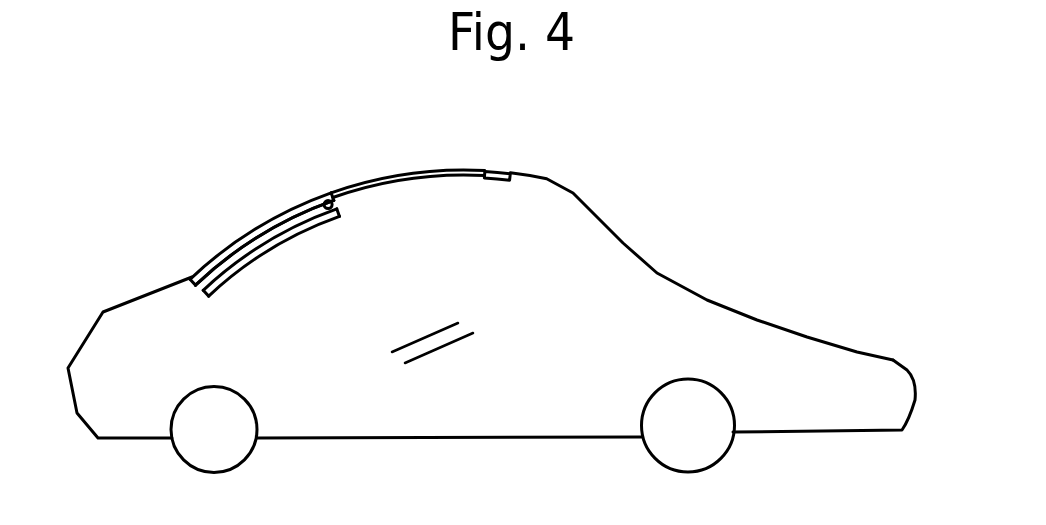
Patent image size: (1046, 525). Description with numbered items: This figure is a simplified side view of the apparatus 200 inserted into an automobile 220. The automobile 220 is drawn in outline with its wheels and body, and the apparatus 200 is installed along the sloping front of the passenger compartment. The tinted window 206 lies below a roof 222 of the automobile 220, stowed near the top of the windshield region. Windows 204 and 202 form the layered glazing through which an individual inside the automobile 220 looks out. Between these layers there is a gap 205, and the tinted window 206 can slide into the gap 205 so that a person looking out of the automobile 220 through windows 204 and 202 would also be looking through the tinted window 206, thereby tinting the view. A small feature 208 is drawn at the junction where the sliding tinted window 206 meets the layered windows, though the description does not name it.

The apparatus 200 is at (350, 201).
The window 202 is at (257, 222).
The window 204 is at (240, 268).
The gap 205 is at (225, 262).
The tinted window 206 is at (487, 172).
The pivot 208 is at (331, 208).
The automobile 220 is at (627, 212).
The roof 222 is at (425, 167).